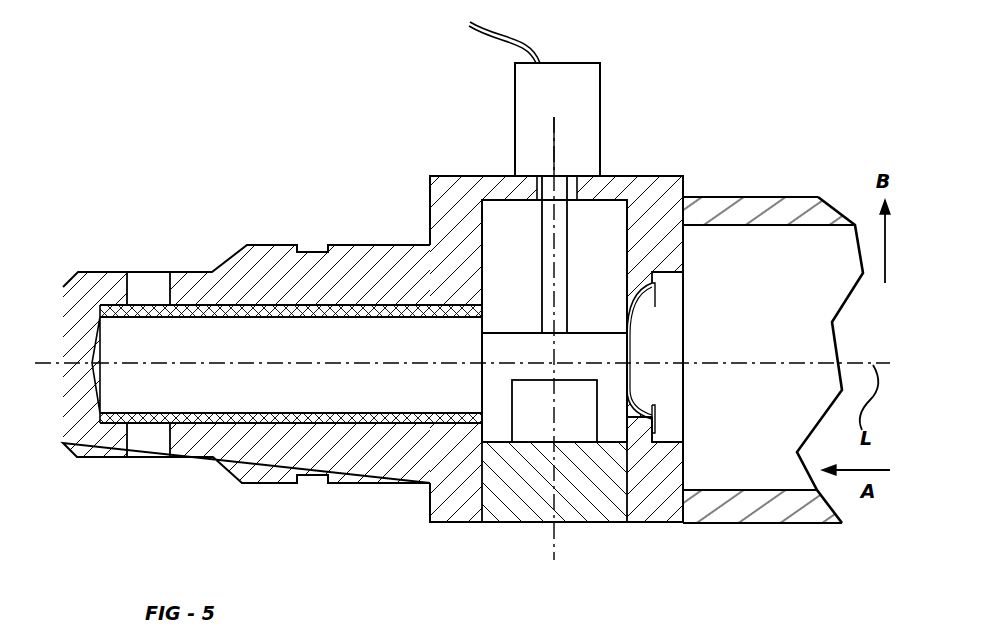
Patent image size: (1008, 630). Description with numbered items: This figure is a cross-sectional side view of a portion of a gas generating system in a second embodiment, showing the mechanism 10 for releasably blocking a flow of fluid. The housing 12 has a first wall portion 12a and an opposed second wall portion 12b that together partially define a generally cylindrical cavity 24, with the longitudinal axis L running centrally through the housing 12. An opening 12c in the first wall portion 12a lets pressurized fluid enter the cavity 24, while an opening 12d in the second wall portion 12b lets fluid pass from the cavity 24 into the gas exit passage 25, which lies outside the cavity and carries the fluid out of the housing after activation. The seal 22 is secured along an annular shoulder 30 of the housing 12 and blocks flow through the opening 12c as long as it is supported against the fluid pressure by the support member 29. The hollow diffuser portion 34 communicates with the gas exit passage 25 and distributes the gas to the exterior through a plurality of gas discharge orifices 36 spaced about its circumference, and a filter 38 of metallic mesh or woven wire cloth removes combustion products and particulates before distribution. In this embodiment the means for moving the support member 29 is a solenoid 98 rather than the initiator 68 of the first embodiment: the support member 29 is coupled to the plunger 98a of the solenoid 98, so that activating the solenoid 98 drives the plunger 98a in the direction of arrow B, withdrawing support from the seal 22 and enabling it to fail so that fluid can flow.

The mechanism 10 is at (658, 148).
The housing 12 is at (430, 177).
The first wall portion 12a is at (615, 268).
The second wall portion 12b is at (480, 262).
The opening 12c is at (648, 410).
The opening 12d is at (482, 327).
The seal 22 is at (632, 325).
The cavity 24 is at (522, 260).
The gas exit passage 25 is at (188, 388).
The support member 29 is at (613, 422).
The annular shoulder 30 is at (657, 427).
The diffuser portion 34 is at (325, 245).
The gas discharge orifices 36 is at (147, 282).
The filter 38 is at (222, 413).
The initiator 68 is at (532, 415).
The solenoid 98 is at (600, 118).
The plunger 98a is at (560, 278).